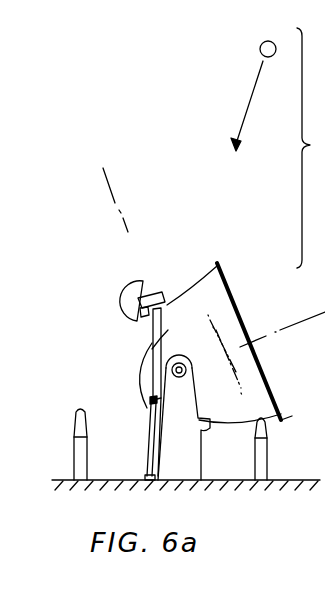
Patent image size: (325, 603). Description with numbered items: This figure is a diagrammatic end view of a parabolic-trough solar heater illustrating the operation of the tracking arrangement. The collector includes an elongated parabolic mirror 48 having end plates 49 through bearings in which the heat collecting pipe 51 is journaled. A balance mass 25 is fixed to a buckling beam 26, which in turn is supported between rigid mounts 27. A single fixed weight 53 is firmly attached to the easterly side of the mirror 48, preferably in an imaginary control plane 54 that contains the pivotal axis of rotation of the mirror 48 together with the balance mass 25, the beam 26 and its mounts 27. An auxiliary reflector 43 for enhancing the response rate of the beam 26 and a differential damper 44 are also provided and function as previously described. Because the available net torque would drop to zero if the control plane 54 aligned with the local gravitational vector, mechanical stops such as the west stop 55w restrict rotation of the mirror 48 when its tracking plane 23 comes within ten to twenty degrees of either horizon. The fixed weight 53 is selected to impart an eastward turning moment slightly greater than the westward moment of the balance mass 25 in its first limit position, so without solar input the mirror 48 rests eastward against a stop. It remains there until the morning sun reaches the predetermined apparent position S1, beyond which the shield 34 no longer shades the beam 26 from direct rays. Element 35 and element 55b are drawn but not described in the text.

The predetermined apparent sun position S1 is at (259, 50).
The control plane 54 is at (112, 192).
The auxiliary reflector 43 is at (124, 296).
The buckling beam 26 is at (128, 312).
The balance mass 25 is at (152, 292).
The rigid mounts 27 is at (152, 325).
The differential damper 44 is at (152, 349).
The parabolic mirror 48 is at (187, 294).
The shield 34 is at (217, 266).
The end plates 49 is at (222, 290).
The tracking plane 23 is at (277, 330).
The bar foot 35 is at (298, 402).
The heat collecting pipe 51 is at (172, 377).
The fixed weight 53 is at (201, 428).
The west stop 55w is at (73, 434).
The right stop post 55b is at (268, 431).